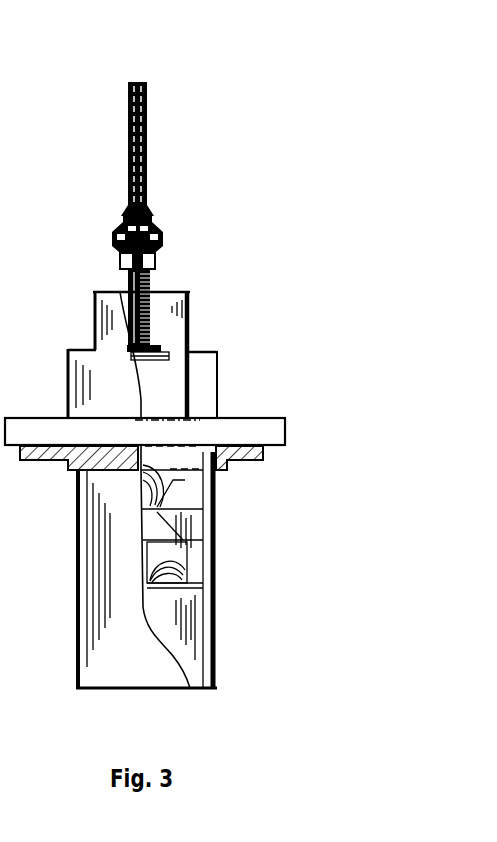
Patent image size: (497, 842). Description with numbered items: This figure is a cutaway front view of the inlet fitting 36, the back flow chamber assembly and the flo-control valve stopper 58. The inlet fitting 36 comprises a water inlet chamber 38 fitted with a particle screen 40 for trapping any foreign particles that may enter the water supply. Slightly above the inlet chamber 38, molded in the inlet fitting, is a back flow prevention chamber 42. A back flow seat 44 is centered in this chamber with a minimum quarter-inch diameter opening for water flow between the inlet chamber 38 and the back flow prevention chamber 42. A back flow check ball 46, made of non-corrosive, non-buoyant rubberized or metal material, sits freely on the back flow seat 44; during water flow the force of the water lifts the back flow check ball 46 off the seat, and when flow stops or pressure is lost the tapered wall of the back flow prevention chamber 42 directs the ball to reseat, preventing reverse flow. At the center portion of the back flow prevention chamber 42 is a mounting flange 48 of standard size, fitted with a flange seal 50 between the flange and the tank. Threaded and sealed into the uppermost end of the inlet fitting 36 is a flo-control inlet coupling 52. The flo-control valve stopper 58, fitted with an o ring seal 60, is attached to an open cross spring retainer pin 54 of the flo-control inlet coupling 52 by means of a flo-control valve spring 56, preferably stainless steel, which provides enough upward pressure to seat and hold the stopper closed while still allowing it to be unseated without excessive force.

The inlet fitting 36 is at (217, 614).
The water inlet chamber 38 is at (185, 649).
The particle screen 40 is at (177, 563).
The back flow prevention chamber 42 is at (222, 464).
The back flow seat 44 is at (162, 511).
The back flow check ball 46 is at (173, 490).
The mounting flange 48 is at (285, 425).
The flange seal 50 is at (263, 456).
The flo-control inlet coupling 52 is at (190, 292).
The open cross spring retainer pin 54 is at (195, 350).
The flo-control valve spring 56 is at (150, 328).
The flo-control valve stopper 58 is at (146, 198).
The o ring seal 60 is at (160, 226).